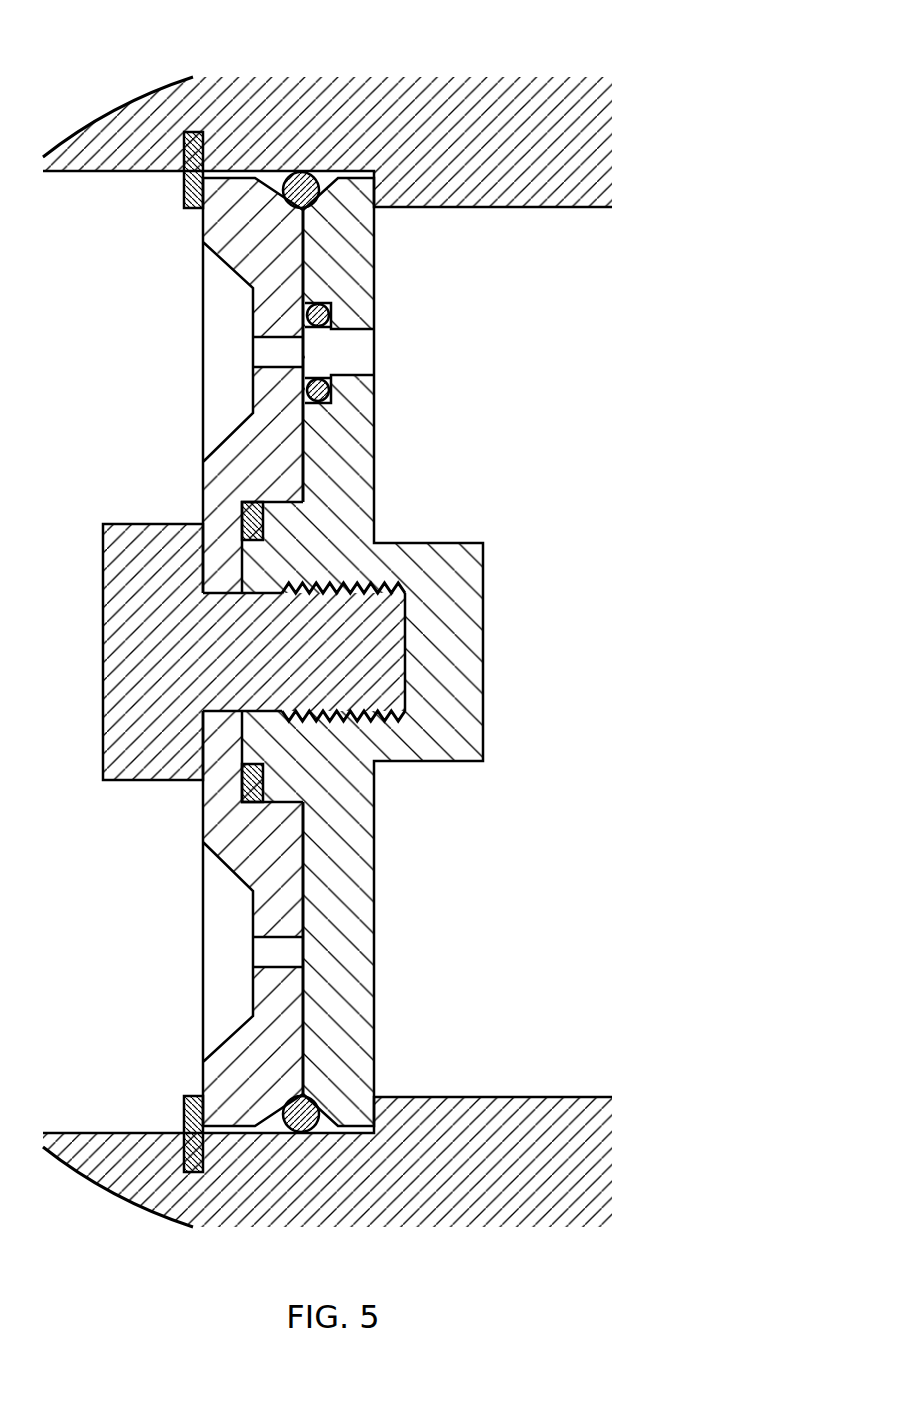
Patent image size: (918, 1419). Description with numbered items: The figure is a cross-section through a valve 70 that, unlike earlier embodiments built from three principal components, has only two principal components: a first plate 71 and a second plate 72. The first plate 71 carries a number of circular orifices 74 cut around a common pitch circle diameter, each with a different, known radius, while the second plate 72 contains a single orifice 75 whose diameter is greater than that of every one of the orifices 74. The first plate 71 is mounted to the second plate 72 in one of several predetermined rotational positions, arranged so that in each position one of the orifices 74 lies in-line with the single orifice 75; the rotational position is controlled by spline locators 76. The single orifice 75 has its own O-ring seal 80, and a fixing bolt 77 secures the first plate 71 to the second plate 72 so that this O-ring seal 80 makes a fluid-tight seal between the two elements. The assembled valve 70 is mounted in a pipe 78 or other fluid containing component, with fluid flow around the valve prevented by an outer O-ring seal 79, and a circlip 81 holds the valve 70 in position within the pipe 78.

The valve 70 is at (478, 826).
The first plate 71 is at (247, 197).
The second plate 72 is at (343, 205).
The circular orifices 74 is at (267, 349).
The single orifice 75 is at (358, 348).
The spline locators 76 is at (242, 520).
The fixing bolt 77 is at (103, 568).
The pipe 78 is at (533, 100).
The outer O-ring seal 79 is at (307, 1132).
The O-ring seal 80 is at (329, 390).
The circlip 81 is at (178, 147).